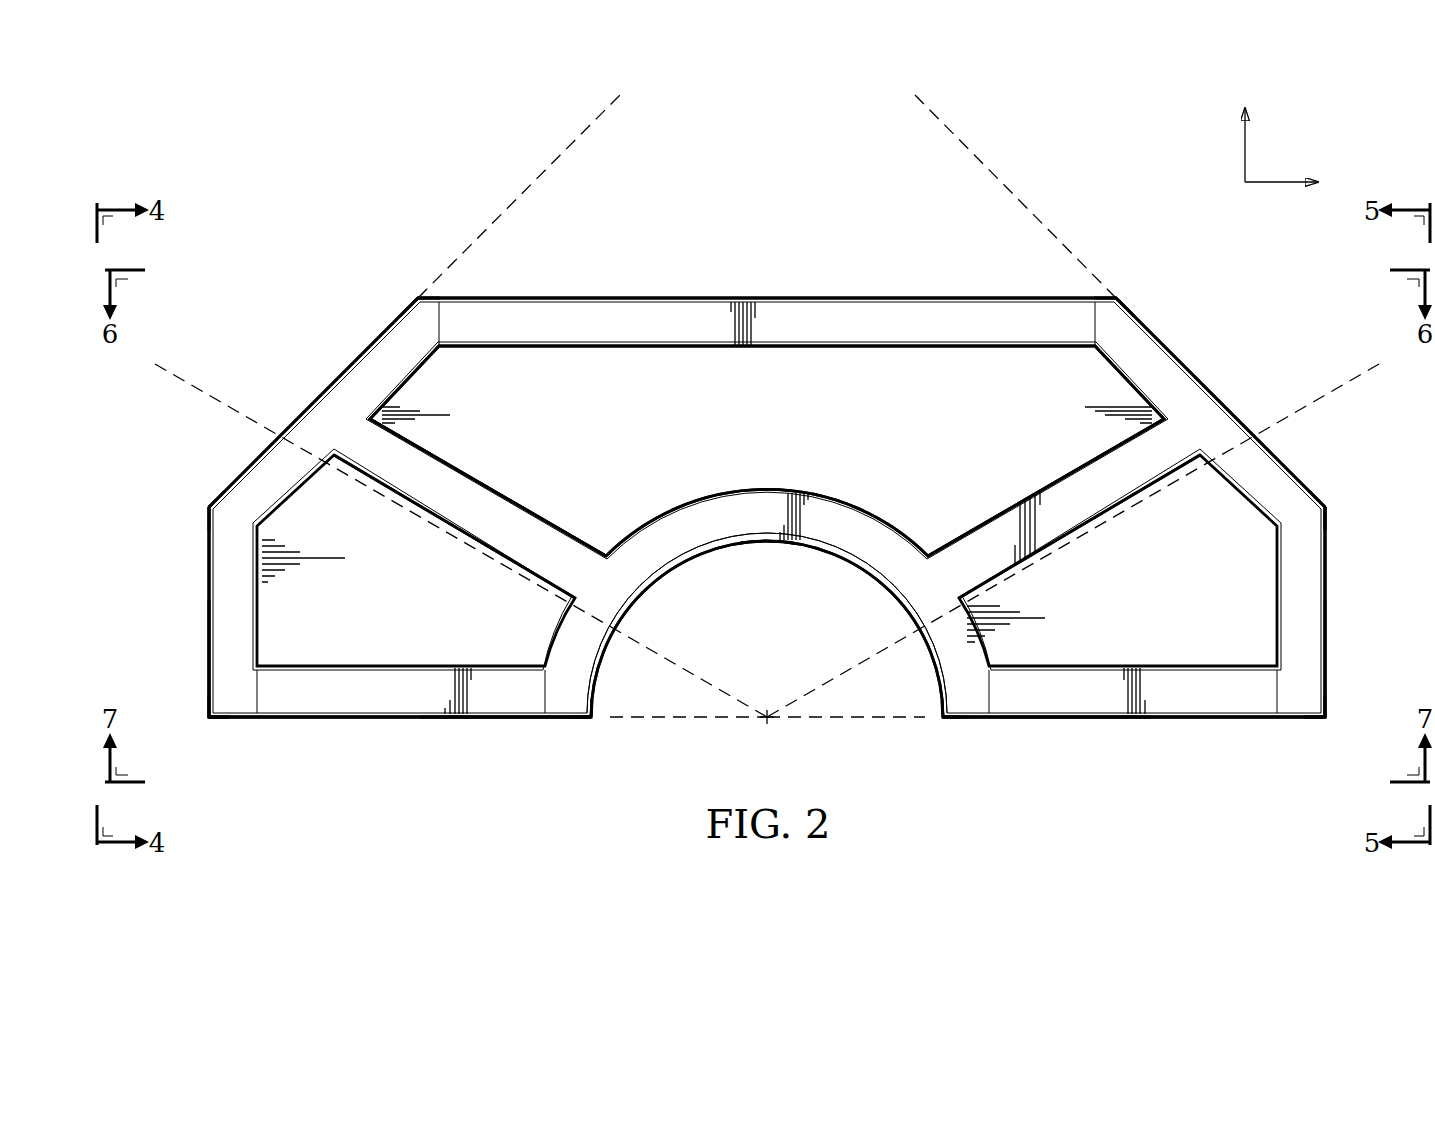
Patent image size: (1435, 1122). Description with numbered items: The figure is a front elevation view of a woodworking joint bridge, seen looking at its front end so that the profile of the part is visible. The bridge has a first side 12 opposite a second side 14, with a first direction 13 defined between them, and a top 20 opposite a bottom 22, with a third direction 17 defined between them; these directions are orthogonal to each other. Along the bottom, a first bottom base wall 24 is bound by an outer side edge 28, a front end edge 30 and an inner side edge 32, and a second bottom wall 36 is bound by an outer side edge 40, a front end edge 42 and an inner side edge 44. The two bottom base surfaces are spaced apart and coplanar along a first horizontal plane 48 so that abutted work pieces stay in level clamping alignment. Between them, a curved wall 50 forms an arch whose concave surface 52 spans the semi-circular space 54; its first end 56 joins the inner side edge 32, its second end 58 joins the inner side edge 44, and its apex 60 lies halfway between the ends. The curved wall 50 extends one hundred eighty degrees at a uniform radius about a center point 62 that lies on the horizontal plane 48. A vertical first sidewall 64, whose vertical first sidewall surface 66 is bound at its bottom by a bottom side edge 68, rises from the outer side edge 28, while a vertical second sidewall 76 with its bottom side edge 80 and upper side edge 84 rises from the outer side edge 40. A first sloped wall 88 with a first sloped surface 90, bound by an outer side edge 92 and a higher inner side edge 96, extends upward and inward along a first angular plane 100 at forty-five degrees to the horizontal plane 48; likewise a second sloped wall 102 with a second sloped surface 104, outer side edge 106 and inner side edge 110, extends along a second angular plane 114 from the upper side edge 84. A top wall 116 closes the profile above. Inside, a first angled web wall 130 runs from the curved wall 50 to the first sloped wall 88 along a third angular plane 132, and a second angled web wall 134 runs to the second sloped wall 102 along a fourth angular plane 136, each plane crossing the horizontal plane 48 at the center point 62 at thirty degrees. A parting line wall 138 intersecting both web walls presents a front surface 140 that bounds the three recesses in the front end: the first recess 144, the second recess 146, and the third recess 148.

The first side 12 is at (163, 600).
The first direction 13 is at (1278, 182).
The second side 14 is at (1372, 600).
The third direction 17 is at (1245, 148).
The top 20 is at (689, 253).
The bottom 22 is at (360, 778).
The first bottom base wall 24 is at (414, 724).
The outer side edge 28 is at (214, 722).
The front end edge 30 is at (485, 722).
The inner side edge 32 is at (588, 722).
The second bottom wall 36 is at (1172, 724).
The outer side edge 40 is at (1320, 722).
The front end edge 42 is at (1075, 722).
The inner side edge 44 is at (950, 722).
The first horizontal plane 48 is at (684, 719).
The curved wall 50 is at (664, 594).
The concave surface 52 is at (824, 555).
The space 54 is at (858, 700).
The first end 56 is at (597, 719).
The second end 58 is at (937, 719).
The apex 60 is at (770, 543).
The center point 62 is at (762, 724).
The vertical first sidewall 64 is at (200, 550).
The vertical first sidewall surface 66 is at (207, 650).
The bottom side edge 68 is at (207, 713).
The vertical second sidewall 76 is at (1336, 550).
The bottom side edge 80 is at (1327, 713).
The upper side edge 84 is at (1327, 506).
The first sloped wall 88 is at (352, 349).
The first sloped surface 90 is at (327, 406).
The outer side edge 92 is at (208, 506).
The inner side edge 96 is at (418, 297).
The first angular plane 100 is at (575, 143).
The second sloped wall 102 is at (1183, 349).
The second sloped surface 104 is at (1208, 406).
The outer side edge 106 is at (1325, 506).
The inner side edge 110 is at (1118, 297).
The second angular plane 114 is at (962, 143).
The top wall 116 is at (852, 296).
The first angled web wall 130 is at (493, 486).
The third angular plane 132 is at (200, 386).
The second angled web wall 134 is at (1042, 486).
The fourth angular plane 136 is at (1338, 385).
The parting line wall 138 is at (960, 378).
The front surface 140 is at (748, 434).
The first recess 144 is at (316, 650).
The second recess 146 is at (580, 372).
The third recess 148 is at (1228, 650).